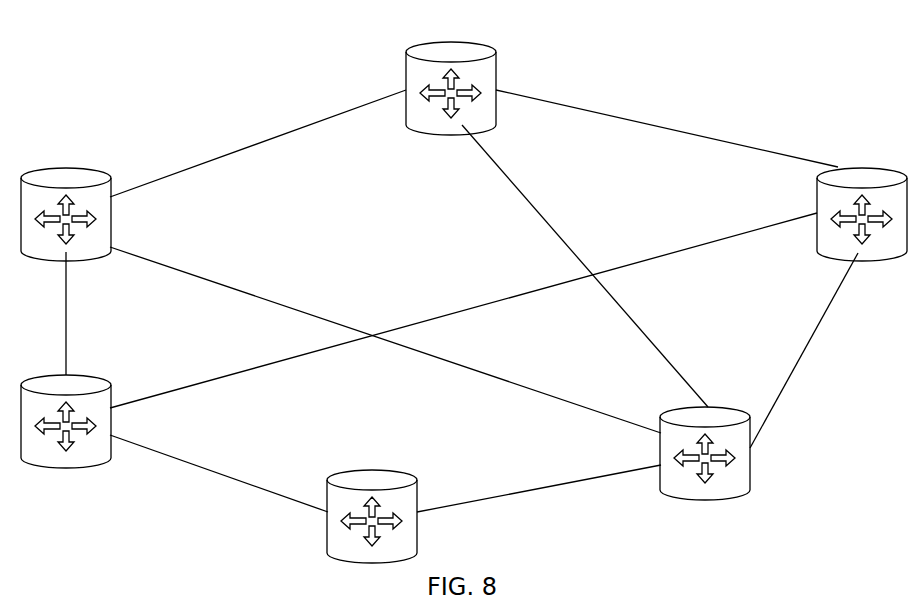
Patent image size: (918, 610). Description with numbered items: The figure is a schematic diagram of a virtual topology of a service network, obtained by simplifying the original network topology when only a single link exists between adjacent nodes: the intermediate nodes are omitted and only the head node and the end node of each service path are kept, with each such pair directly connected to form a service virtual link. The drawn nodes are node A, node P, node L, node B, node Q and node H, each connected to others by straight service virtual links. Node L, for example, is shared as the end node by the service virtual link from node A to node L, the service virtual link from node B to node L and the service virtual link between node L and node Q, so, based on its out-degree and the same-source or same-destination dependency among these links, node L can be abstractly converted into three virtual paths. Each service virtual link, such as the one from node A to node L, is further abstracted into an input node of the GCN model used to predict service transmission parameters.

The node A is at (451, 72).
The node P is at (66, 195).
The node L is at (862, 195).
The node B is at (66, 406).
The node Q is at (705, 432).
The node H is at (372, 496).